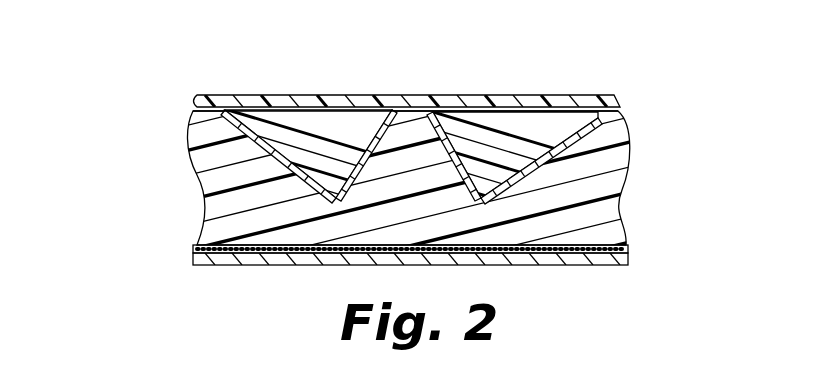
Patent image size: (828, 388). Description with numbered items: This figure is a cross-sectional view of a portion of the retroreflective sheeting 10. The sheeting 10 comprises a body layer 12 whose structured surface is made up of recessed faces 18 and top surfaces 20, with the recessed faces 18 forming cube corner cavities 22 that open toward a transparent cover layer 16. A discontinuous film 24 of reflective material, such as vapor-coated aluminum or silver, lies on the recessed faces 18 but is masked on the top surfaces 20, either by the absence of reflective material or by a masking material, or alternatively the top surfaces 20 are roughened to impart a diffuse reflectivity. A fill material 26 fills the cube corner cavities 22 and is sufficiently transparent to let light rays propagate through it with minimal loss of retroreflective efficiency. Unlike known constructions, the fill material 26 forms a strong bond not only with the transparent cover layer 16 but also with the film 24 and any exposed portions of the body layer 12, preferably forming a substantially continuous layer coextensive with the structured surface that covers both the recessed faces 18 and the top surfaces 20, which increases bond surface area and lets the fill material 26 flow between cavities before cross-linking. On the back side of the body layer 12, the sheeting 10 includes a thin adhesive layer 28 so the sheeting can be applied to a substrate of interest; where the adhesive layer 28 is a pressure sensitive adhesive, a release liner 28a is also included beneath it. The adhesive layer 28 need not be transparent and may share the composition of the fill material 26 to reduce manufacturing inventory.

The retroreflective sheeting 10 is at (150, 97).
The body layer 12 is at (623, 177).
The transparent cover layer 16 is at (620, 107).
The recessed faces 18 is at (352, 110).
The top surfaces 20 is at (203, 100).
The cube corner cavities 22 is at (269, 108).
The discontinuous film of reflective material 24 is at (386, 110).
The fill material 26 is at (307, 98).
The adhesive layer 28 is at (197, 249).
The release liner 28a is at (207, 260).